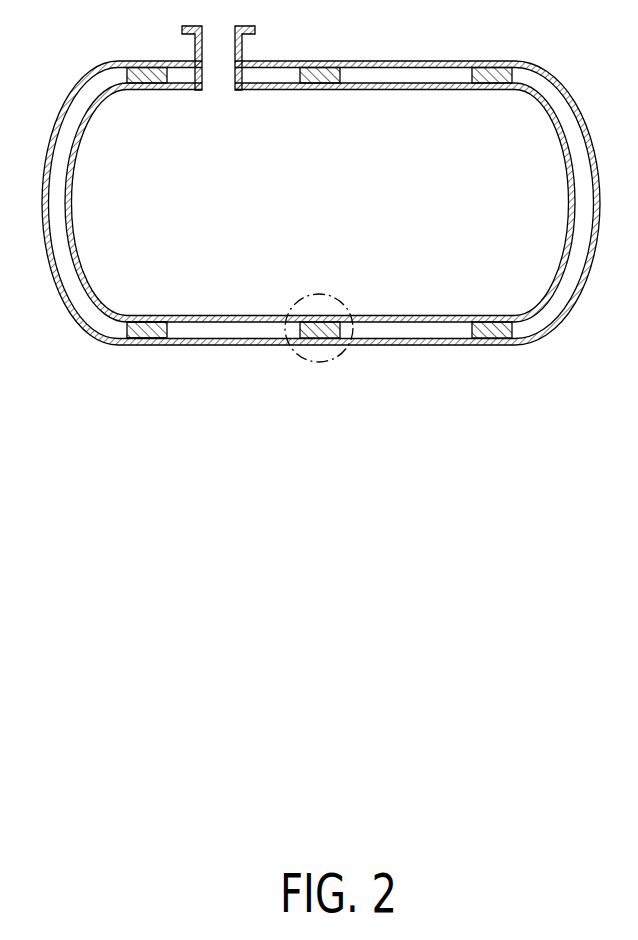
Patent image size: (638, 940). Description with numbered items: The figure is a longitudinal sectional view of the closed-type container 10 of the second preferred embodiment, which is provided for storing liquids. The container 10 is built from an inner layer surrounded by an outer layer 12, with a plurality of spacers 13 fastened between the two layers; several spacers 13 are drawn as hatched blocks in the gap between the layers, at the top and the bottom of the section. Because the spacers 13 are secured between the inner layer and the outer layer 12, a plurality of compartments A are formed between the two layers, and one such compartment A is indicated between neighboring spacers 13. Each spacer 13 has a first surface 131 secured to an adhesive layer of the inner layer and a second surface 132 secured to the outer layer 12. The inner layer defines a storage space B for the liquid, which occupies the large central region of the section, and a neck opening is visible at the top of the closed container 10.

The container 10 is at (308, 234).
The outer layer 12 is at (90, 333).
The spacer 13 is at (297, 256).
The first surface 131 is at (153, 322).
The second surface 132 is at (135, 339).
The compartment A is at (453, 333).
The storage space B is at (112, 283).